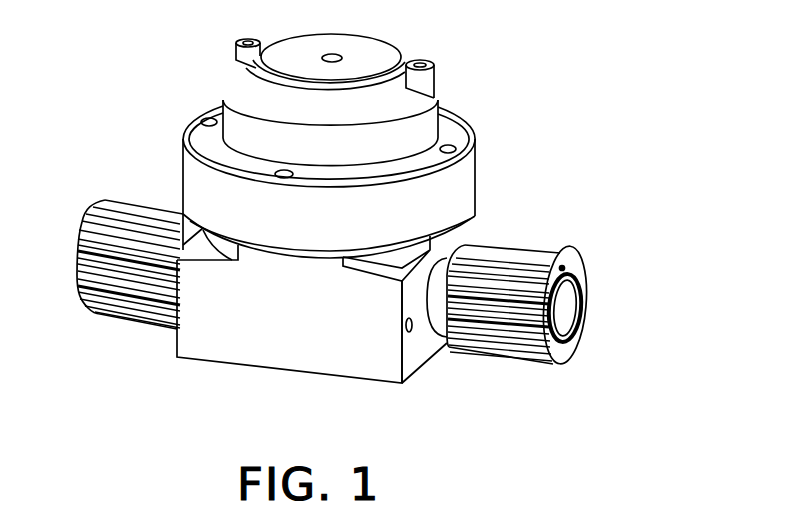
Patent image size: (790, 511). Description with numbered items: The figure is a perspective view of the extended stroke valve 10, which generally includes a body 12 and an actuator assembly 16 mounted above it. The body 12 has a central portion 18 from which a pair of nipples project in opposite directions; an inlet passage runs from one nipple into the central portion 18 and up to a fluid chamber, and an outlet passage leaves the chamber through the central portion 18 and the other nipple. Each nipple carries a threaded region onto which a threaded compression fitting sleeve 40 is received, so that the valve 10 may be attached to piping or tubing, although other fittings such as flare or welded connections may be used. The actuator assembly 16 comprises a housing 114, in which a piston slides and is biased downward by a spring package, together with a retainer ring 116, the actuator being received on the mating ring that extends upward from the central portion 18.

The extended stroke valve 10 is at (577, 166).
The body 12 is at (380, 370).
The actuator assembly 16 is at (475, 152).
The central portion 18 is at (237, 342).
The threaded compression fitting sleeve 40 is at (113, 313).
The housing 114 is at (437, 101).
The retainer ring 116 is at (457, 197).